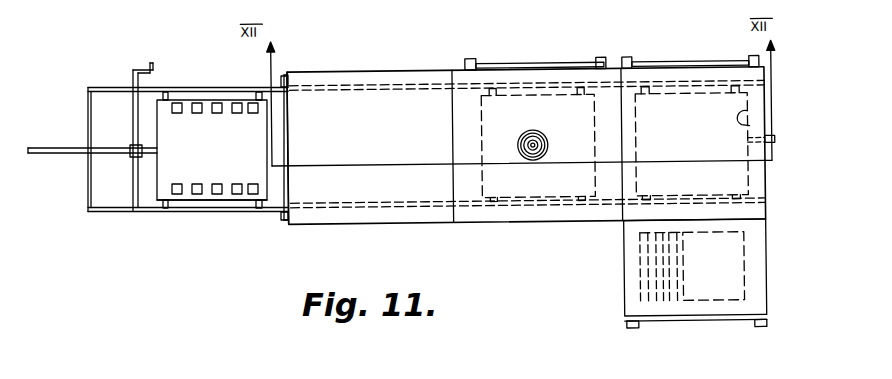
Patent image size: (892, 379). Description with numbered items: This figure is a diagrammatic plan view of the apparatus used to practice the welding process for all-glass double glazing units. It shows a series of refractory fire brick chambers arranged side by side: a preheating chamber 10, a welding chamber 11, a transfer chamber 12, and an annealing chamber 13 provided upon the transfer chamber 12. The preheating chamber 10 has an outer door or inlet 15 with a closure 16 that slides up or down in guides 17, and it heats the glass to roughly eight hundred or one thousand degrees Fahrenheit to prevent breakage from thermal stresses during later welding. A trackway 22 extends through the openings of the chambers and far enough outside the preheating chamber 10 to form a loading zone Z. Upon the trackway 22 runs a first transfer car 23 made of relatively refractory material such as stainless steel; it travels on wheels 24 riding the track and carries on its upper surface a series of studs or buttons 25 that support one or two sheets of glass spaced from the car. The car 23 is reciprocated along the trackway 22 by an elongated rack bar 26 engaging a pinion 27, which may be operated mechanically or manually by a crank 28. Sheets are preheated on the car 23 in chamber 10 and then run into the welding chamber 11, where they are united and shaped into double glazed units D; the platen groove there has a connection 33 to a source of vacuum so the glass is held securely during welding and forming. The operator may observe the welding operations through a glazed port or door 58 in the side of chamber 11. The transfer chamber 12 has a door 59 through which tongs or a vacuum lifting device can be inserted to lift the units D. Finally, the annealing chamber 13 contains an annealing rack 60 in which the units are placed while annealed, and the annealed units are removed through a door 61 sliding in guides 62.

The preheating chamber 10 is at (378, 195).
The welding chamber 11 is at (538, 144).
The transfer chamber 12 is at (691, 143).
The annealing chamber 13 is at (695, 267).
The outer door or inlet 15 is at (288, 146).
The closure 16 is at (283, 112).
The guides 17 is at (284, 76).
The trackway 22 is at (109, 88).
The first transfer car 23 is at (216, 157).
The wheels 24 is at (265, 92).
The studs or buttons 25 is at (195, 114).
The elongated rack bar 26 is at (40, 147).
The pinion 27 is at (132, 156).
The crank 28 is at (147, 63).
The vacuum connection 33 is at (545, 138).
The glazed port or door 58 is at (531, 64).
The door 59 is at (695, 65).
The annealing rack 60 is at (712, 305).
The door 61 is at (735, 325).
The guides 62 is at (762, 330).
The double glazed unit D is at (752, 123).
The loading zone Z is at (200, 202).